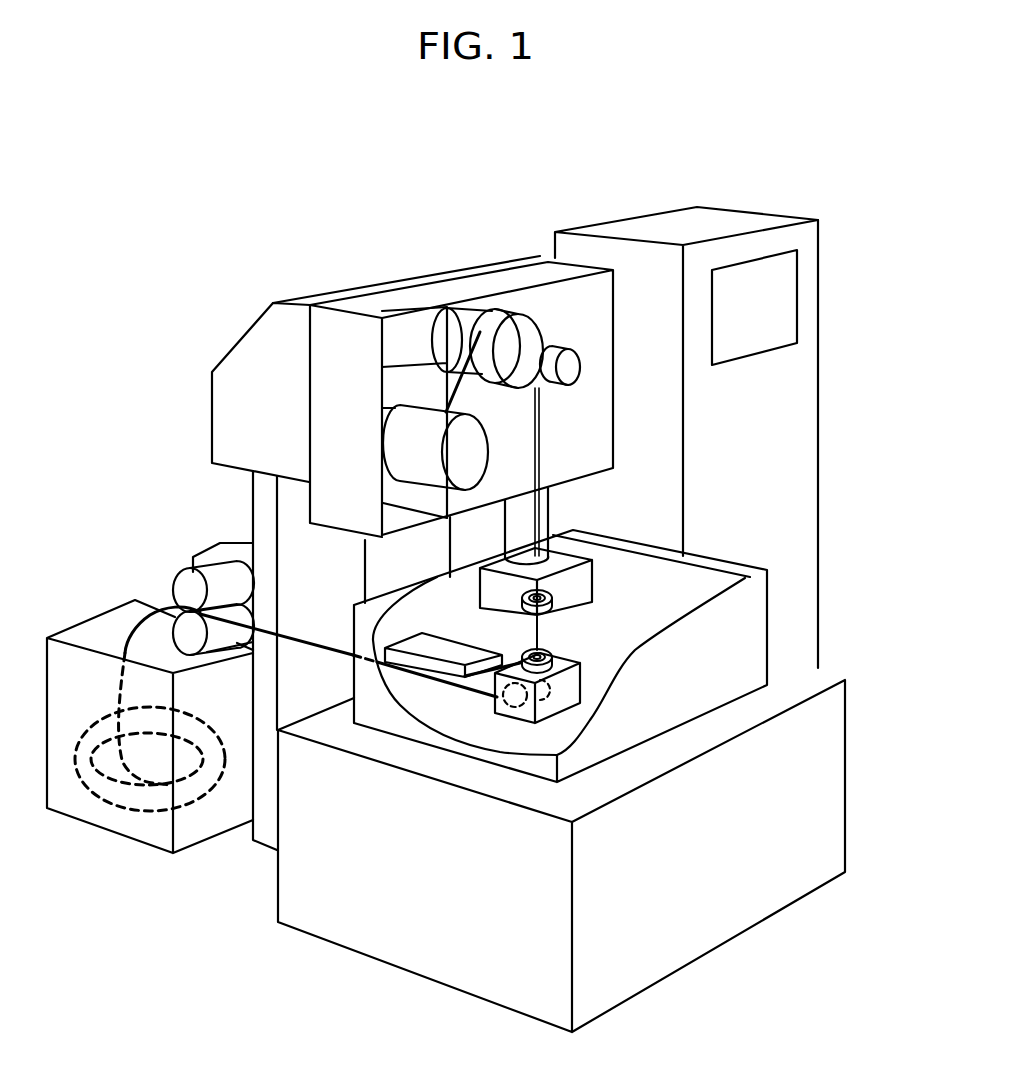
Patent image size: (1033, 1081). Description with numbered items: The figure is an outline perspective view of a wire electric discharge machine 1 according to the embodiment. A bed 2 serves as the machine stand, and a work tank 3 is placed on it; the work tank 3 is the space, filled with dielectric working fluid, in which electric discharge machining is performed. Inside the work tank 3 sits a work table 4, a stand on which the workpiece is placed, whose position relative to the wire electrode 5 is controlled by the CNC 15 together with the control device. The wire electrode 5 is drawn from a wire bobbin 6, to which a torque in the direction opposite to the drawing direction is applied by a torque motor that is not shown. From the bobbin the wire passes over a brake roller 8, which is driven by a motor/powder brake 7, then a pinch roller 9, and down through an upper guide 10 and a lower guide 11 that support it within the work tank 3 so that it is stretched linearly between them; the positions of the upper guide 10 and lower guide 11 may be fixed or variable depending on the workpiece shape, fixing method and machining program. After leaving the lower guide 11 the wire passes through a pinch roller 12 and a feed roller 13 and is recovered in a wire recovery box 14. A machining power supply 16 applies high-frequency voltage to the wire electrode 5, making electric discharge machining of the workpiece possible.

The wire electric discharge machine 1 is at (606, 157).
The bed 2 is at (832, 776).
The work tank 3 is at (742, 613).
The work table 4 is at (451, 648).
The wire electrode 5 is at (540, 623).
The wire bobbin 6 is at (463, 453).
The motor/powder brake 7 is at (463, 318).
The brake roller 8 is at (500, 313).
The pinch roller 9 is at (581, 362).
The upper guide 10 is at (582, 588).
The lower guide 11 is at (573, 697).
The pinch roller 12 is at (221, 578).
The feed roller 13 is at (227, 628).
The wire recovery box 14 is at (86, 629).
The CNC (numerical control device) 15 is at (797, 320).
The machining power supply 16 is at (727, 219).